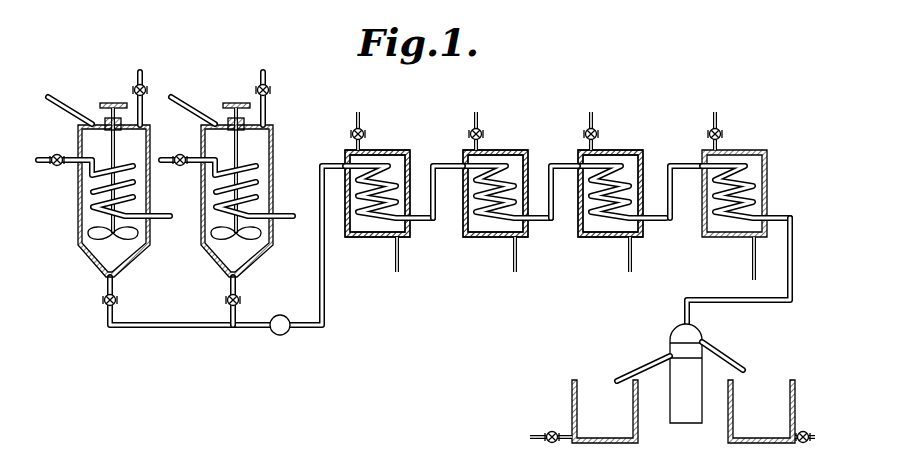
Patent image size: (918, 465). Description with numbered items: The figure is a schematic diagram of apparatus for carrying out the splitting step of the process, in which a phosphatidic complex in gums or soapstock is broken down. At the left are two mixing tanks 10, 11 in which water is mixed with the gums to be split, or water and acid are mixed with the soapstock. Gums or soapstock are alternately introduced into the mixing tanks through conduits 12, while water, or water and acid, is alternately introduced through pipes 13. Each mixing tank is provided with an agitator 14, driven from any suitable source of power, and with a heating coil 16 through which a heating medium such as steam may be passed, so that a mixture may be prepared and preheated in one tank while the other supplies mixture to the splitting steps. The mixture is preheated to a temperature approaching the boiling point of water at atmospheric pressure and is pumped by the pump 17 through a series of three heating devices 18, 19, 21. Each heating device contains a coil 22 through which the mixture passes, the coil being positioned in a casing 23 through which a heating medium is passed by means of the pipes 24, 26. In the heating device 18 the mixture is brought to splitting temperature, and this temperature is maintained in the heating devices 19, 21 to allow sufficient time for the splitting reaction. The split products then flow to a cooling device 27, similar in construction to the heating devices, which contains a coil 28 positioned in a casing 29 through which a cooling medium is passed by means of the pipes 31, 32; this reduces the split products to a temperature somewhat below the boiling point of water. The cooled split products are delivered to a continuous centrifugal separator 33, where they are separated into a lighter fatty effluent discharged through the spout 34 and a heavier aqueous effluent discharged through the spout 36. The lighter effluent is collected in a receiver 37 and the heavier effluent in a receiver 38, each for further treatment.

The mixing tank 10 is at (78, 208).
The mixing tank 11 is at (272, 186).
The conduit 12 is at (62, 103).
The pipe 13 is at (143, 84).
The agitator 14 is at (100, 238).
The heating coil 16 is at (96, 173).
The pump 17 is at (286, 334).
The heating device 18 is at (406, 151).
The heating device 19 is at (526, 151).
The heating device 21 is at (605, 152).
The coil 22 is at (372, 168).
The casing 23 is at (352, 235).
The pipe 24 is at (355, 128).
The pipe 26 is at (398, 262).
The cooling device 27 is at (749, 188).
The coil 28 is at (760, 168).
The casing 29 is at (705, 240).
The pipe 31 is at (722, 122).
The pipe 32 is at (756, 264).
The continuous centrifugal separator 33 is at (676, 338).
The spout 34 is at (722, 358).
The spout 36 is at (647, 372).
The receiver 37 is at (798, 386).
The receiver 38 is at (572, 398).